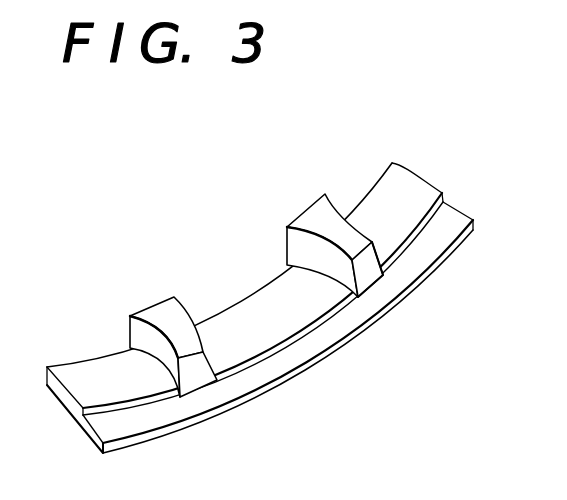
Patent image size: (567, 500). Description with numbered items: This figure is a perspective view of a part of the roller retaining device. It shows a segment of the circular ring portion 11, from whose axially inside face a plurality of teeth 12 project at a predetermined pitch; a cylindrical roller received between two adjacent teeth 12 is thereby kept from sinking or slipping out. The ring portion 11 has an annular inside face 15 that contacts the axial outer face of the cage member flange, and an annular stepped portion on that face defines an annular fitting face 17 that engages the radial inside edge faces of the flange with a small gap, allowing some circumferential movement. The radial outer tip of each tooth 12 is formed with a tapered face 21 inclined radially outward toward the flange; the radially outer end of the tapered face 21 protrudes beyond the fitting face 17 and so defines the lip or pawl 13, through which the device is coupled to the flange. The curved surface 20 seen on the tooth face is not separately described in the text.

The circular ring portion 11 is at (232, 318).
The teeth 12 is at (380, 226).
The lip 13 is at (372, 287).
The annular inside face 15 is at (297, 350).
The annular fitting face 17 is at (240, 360).
The concave cam surface 20 is at (302, 252).
The tapered face 21 is at (370, 259).